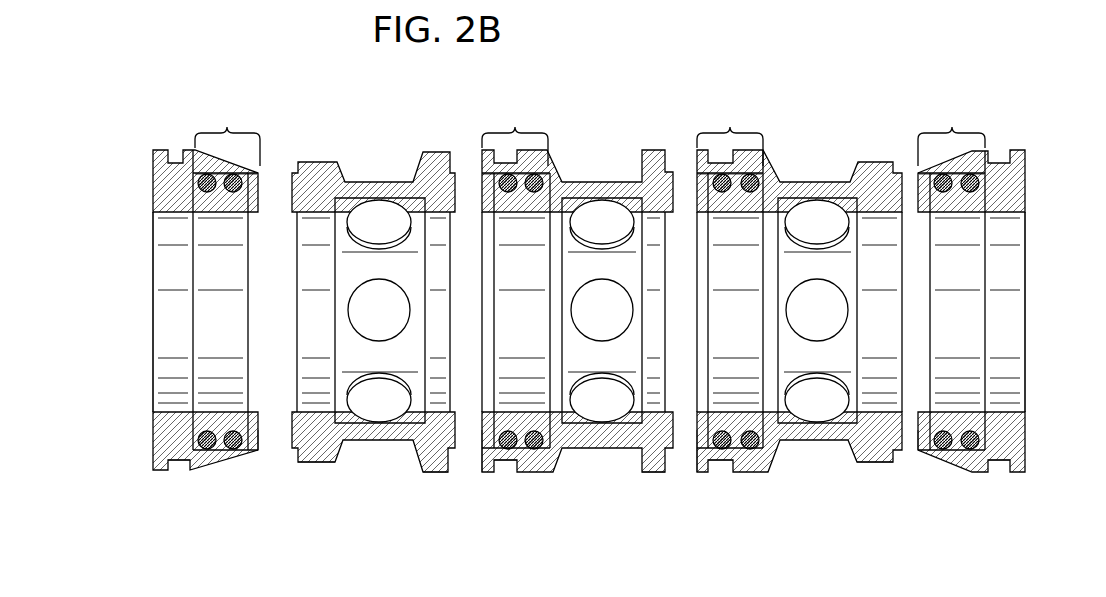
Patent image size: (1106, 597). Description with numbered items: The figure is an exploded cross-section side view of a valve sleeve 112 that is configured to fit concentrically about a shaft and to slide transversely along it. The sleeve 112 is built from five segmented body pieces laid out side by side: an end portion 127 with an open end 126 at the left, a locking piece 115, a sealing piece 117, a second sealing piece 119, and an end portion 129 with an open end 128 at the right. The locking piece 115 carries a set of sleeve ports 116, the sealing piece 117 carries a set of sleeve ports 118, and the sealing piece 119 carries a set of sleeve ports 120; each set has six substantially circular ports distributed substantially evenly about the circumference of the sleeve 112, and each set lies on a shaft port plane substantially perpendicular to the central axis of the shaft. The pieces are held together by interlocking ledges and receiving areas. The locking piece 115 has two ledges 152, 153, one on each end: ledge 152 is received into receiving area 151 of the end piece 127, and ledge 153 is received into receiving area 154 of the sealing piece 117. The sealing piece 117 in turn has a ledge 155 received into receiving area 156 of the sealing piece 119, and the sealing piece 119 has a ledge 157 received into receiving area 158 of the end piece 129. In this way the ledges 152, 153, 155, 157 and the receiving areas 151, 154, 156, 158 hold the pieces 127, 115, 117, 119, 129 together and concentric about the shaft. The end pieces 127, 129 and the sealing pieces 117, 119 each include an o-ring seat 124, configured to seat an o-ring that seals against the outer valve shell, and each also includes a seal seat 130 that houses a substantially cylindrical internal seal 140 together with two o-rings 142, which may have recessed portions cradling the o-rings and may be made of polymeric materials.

The sleeve 112 is at (1025, 71).
The locking piece 115 is at (455, 106).
The sleeve ports 116 is at (379, 311).
The sealing piece 117 is at (673, 106).
The sleeve ports 118 is at (602, 311).
The sealing piece 119 is at (697, 106).
The sleeve ports 120 is at (817, 311).
The o-ring seat 124 is at (168, 474).
The open end 126 is at (146, 212).
The end portion 127 is at (153, 106).
The open end 128 is at (1032, 212).
The end portion 129 is at (918, 106).
The seal seat 130 is at (590, 135).
The internal seal 140 is at (972, 200).
The o-rings 142 is at (587, 355).
The receiving area 151 is at (255, 443).
The ledge 152 is at (299, 463).
The ledge 153 is at (447, 473).
The receiving area 154 is at (485, 440).
The ledge 155 is at (665, 455).
The receiving area 156 is at (700, 440).
The ledge 157 is at (900, 462).
The receiving area 158 is at (917, 440).